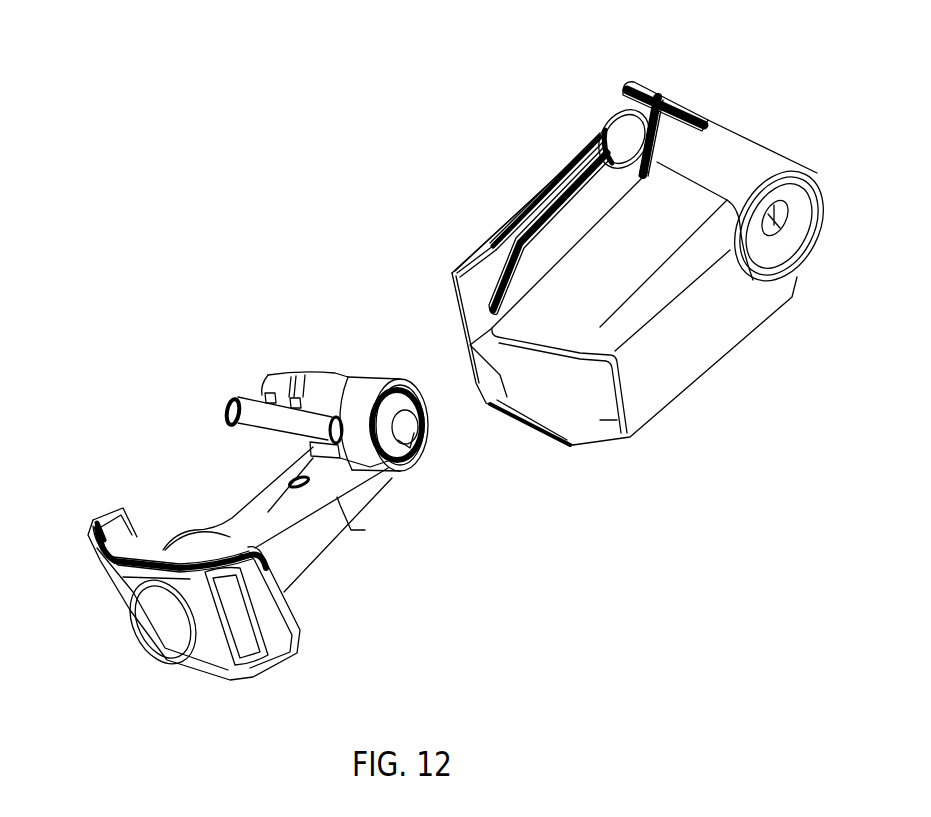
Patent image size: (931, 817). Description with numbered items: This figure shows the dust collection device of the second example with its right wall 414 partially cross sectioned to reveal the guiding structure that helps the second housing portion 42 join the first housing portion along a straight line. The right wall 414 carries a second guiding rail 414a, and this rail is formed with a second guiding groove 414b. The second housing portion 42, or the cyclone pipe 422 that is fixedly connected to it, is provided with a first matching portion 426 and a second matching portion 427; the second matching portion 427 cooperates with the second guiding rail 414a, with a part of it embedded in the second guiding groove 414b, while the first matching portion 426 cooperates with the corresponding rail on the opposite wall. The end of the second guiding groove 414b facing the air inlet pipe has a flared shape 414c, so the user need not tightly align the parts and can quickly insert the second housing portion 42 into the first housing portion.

The second housing portion 42 is at (93, 520).
The right wall 414 is at (578, 120).
The second guiding rail 414a is at (570, 183).
The second guiding groove 414b is at (537, 210).
The flared shape 414c is at (497, 260).
The cyclone pipe 422 is at (337, 370).
The first matching portion 426 is at (370, 467).
The second matching portion 427 is at (231, 400).